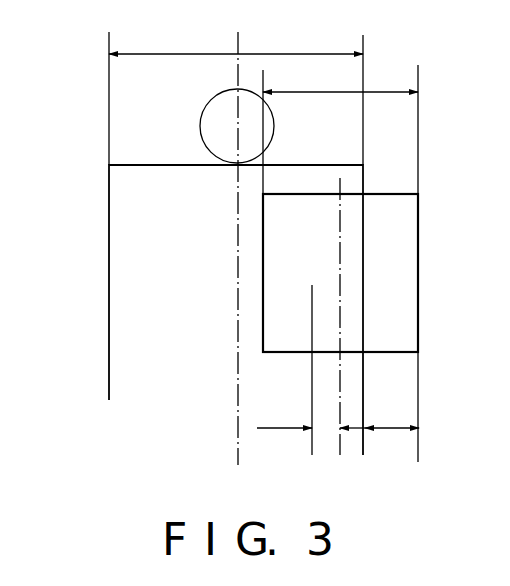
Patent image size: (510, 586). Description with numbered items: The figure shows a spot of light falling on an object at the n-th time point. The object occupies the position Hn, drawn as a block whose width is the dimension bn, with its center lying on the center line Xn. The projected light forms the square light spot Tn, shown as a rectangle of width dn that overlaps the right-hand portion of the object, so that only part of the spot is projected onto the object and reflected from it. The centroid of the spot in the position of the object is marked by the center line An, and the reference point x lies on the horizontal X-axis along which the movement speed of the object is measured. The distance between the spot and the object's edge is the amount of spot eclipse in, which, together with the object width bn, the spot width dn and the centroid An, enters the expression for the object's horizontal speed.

The position of the object Hn is at (106, 272).
The light spot Tn is at (418, 273).
The position of the center of the object Xn is at (296, 235).
The width of the object bn is at (236, 97).
The width of the spot of light dn is at (340, 263).
The centroid of the spot An is at (342, 326).
The X-axis x is at (310, 358).
The amount of spot eclipse in is at (392, 415).